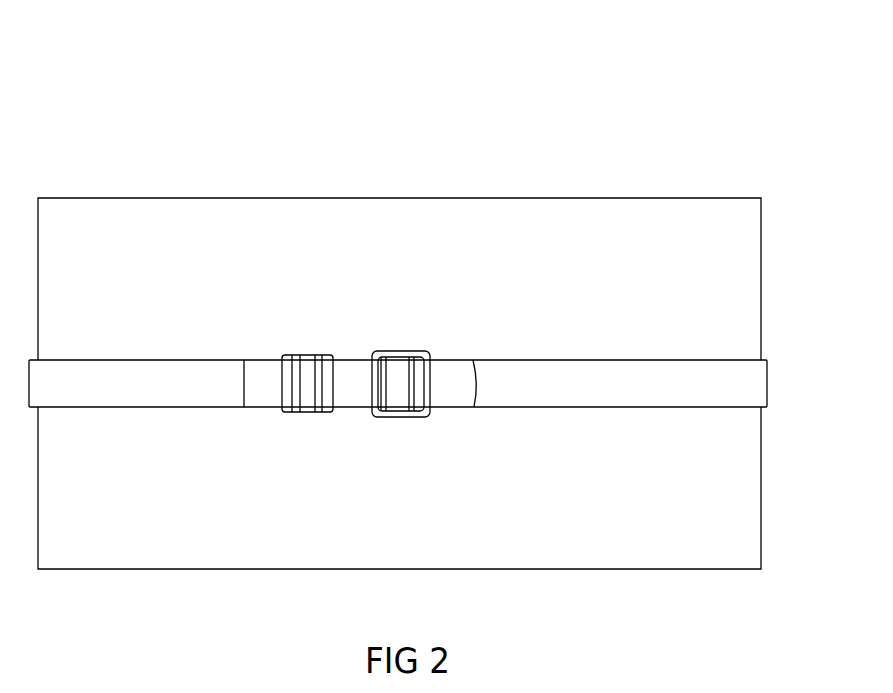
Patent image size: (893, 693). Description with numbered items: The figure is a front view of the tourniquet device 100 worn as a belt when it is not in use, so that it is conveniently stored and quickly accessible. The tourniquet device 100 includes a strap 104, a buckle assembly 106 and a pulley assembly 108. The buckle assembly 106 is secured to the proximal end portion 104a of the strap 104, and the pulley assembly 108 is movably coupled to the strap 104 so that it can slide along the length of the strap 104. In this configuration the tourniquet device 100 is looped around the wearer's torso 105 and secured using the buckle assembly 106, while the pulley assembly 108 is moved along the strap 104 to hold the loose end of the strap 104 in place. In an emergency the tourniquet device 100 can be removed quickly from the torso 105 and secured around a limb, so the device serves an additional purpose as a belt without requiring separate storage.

The tourniquet device 100 is at (398, 330).
The strap 104 is at (398, 257).
The proximal end portion 104a is at (597, 280).
The torso 105 is at (399, 303).
The buckle assembly 106 is at (517, 483).
The pulley assembly 108 is at (211, 489).